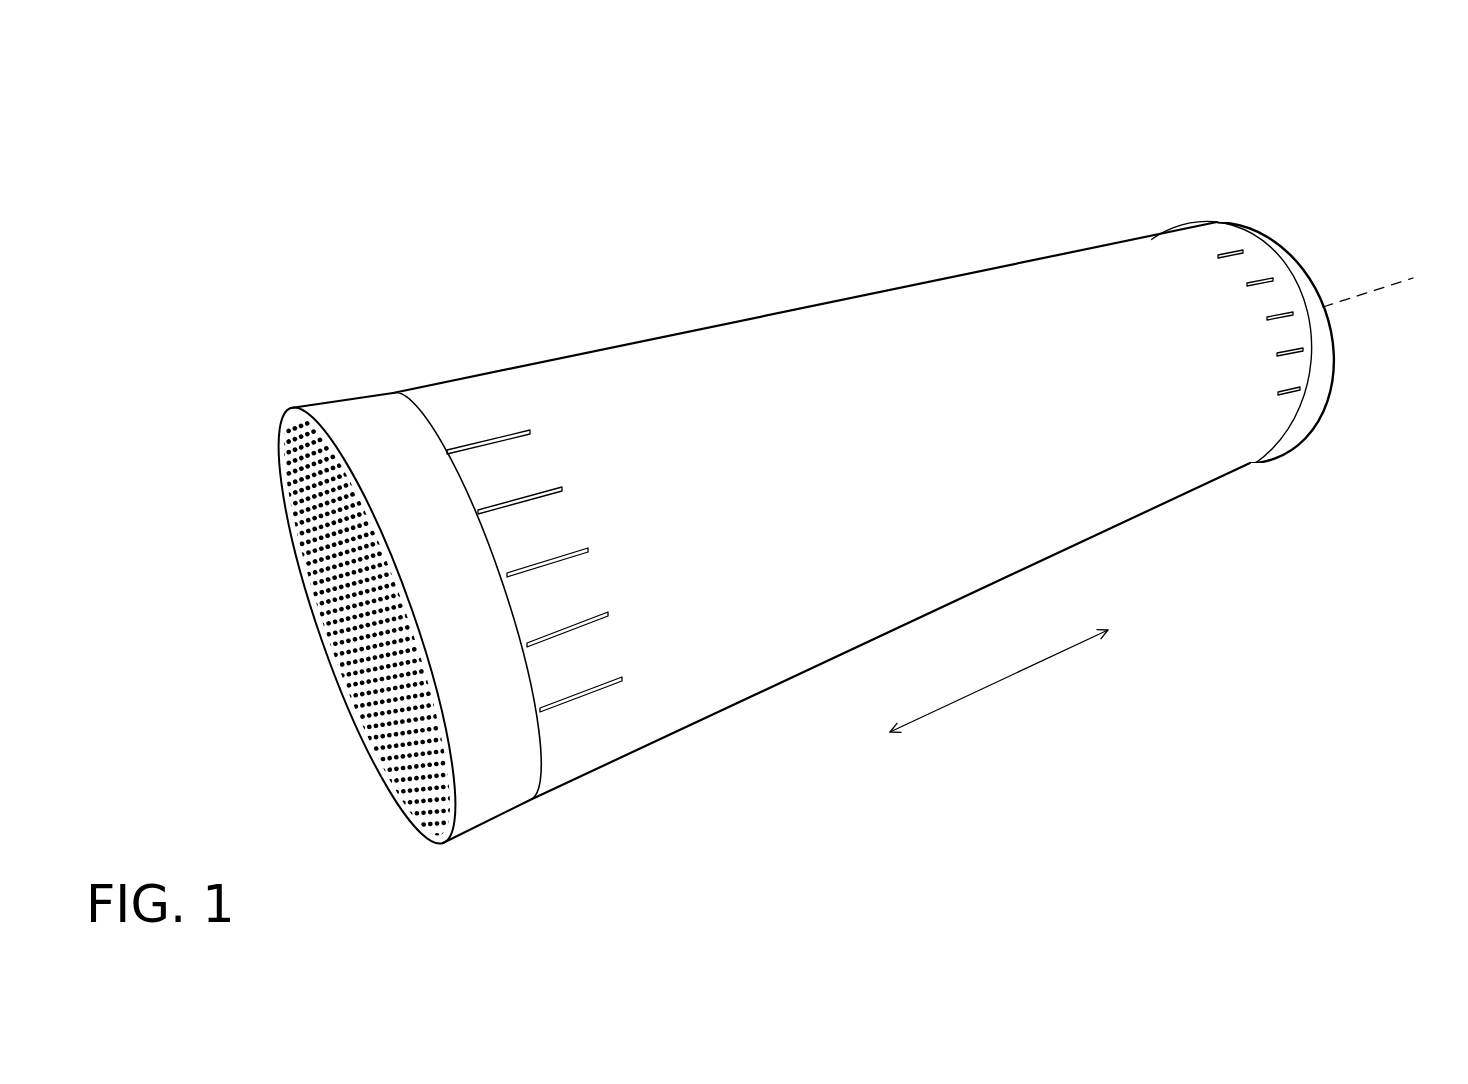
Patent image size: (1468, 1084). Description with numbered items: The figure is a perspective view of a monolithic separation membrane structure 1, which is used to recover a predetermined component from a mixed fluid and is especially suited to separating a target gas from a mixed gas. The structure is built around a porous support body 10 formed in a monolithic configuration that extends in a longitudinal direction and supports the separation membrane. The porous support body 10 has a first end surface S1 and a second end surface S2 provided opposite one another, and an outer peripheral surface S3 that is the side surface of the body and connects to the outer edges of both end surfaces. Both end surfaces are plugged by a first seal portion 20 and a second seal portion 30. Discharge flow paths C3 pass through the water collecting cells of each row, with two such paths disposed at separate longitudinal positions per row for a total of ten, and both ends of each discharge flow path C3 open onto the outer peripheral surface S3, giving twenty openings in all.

The monolithic separation membrane structure 1 is at (303, 195).
The porous support body 10 is at (788, 370).
The first seal portion 20 is at (347, 427).
The second seal portion 30 is at (1315, 377).
The first end surface S1 is at (293, 540).
The second end surface S2 is at (1292, 255).
The outer peripheral surface S3 is at (662, 337).
The discharge flow path C3 is at (493, 443).